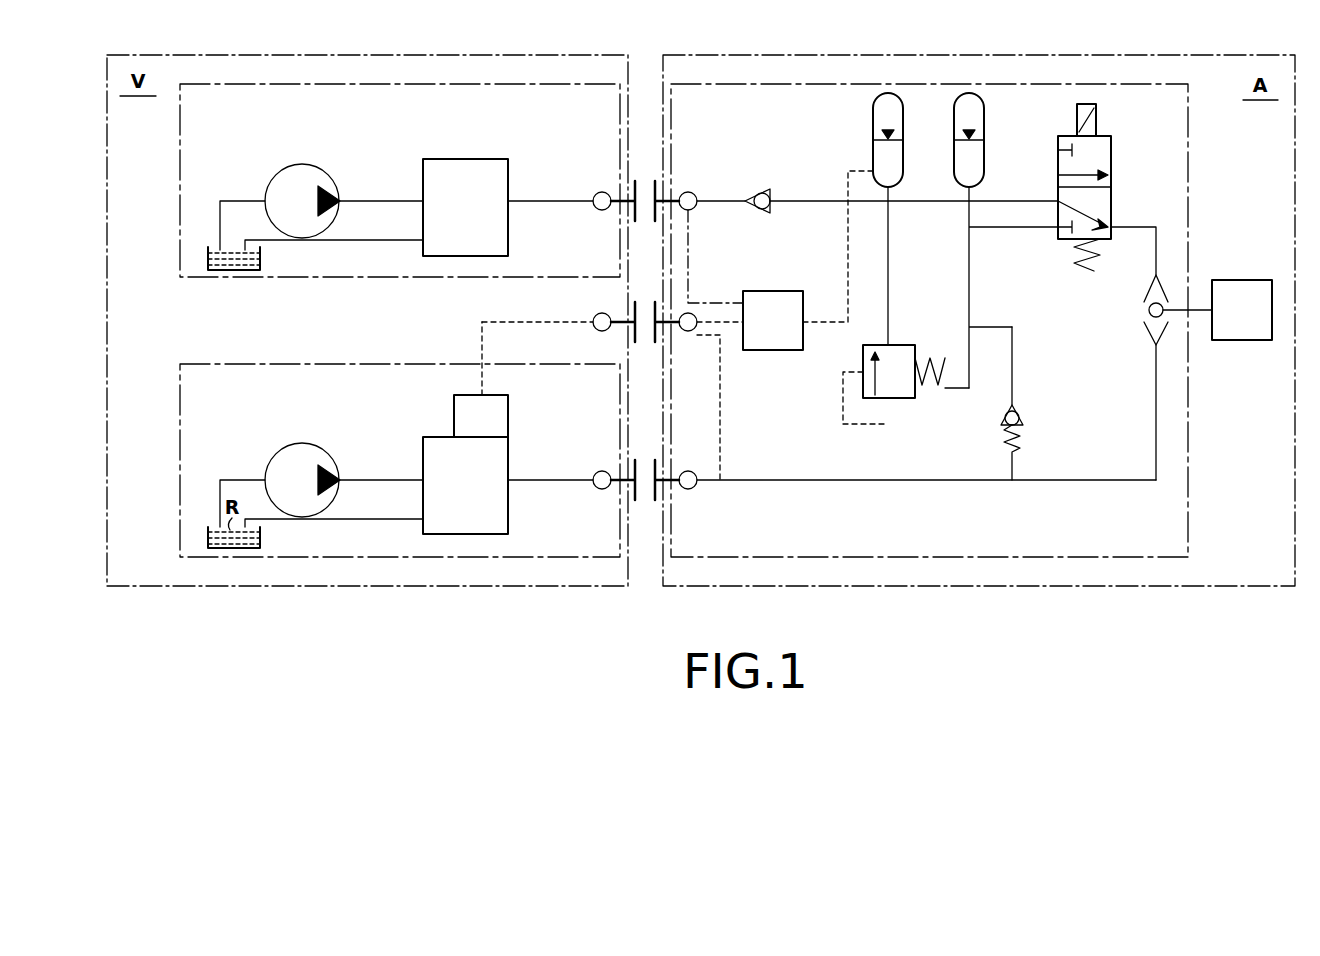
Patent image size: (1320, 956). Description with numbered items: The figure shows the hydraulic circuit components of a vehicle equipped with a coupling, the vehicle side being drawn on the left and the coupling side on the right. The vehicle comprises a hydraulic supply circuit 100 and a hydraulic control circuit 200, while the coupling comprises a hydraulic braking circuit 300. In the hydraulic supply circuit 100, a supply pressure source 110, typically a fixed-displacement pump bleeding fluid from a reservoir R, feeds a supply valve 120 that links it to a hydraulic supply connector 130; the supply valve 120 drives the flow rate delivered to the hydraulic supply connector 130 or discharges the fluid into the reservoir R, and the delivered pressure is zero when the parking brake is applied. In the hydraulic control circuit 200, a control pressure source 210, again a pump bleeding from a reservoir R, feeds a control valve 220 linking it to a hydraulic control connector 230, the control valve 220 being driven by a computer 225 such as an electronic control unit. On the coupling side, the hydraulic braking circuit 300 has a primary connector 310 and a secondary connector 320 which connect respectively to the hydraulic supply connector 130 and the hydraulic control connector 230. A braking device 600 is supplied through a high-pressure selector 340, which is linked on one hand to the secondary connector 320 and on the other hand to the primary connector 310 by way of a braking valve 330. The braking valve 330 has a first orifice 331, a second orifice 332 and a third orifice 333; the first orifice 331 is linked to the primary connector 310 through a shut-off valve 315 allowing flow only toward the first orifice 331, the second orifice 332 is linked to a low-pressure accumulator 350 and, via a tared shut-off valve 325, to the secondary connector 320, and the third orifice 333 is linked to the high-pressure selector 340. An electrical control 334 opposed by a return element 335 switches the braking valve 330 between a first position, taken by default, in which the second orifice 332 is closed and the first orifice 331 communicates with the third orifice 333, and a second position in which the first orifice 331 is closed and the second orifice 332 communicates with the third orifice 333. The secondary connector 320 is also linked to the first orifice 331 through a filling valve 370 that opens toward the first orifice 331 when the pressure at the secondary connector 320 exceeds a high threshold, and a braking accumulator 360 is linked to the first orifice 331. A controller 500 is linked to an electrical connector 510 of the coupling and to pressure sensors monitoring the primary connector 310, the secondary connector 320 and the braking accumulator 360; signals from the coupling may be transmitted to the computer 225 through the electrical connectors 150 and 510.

The hydraulic supply circuit 100 is at (386, 118).
The supply pressure source 110 is at (300, 172).
The supply valve 120 is at (481, 215).
The hydraulic supply connector 130 is at (601, 190).
The electrical connector 150 is at (599, 317).
The hydraulic control circuit 200 is at (386, 396).
The control pressure source 210 is at (300, 452).
The control valve 220 is at (481, 494).
The computer 225 is at (497, 428).
The hydraulic control connector 230 is at (603, 469).
The hydraulic braking circuit 300 is at (1188, 455).
The primary connector 310 is at (695, 190).
The shut-off valve 315 is at (749, 190).
The secondary connector 320 is at (688, 489).
The tared shut-off valve 325 is at (1001, 430).
The braking valve 330 is at (1128, 164).
The first orifice 331 is at (1058, 200).
The second orifice 332 is at (1058, 228).
The third orifice 333 is at (1112, 226).
The control 334 is at (1096, 120).
The return element 335 is at (1088, 271).
The high-pressure selector 340 is at (1139, 336).
The low-pressure accumulator 350 is at (983, 117).
The braking accumulator 360 is at (872, 117).
The filling valve 370 is at (863, 364).
The controller 500 is at (757, 335).
The electrical connector 510 is at (696, 307).
The braking device 600 is at (1226, 325).
The reservoir R is at (230, 254).